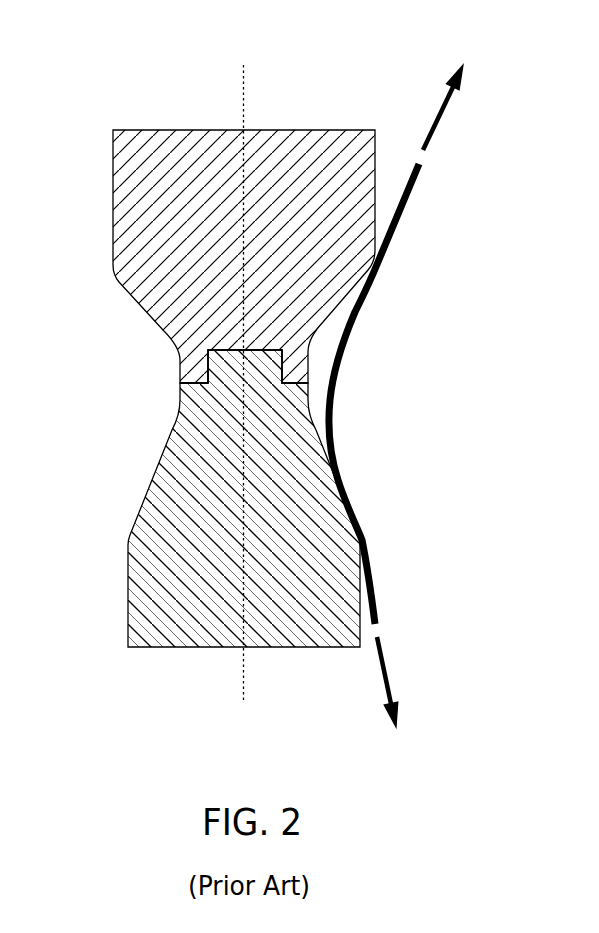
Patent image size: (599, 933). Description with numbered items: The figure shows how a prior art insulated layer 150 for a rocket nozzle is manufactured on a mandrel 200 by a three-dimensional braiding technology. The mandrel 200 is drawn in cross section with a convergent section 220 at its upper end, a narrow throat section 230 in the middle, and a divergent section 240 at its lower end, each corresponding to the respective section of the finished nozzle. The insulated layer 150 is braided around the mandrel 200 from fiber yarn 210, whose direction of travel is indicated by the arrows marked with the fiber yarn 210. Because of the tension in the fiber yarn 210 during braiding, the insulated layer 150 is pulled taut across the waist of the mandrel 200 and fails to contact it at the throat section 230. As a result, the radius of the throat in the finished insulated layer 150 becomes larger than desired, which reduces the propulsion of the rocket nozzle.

The mandrel 200 is at (148, 130).
The convergent section 220 is at (141, 296).
The throat section 230 is at (177, 367).
The divergent section 240 is at (148, 472).
The insulated layer 150 is at (343, 347).
The fiber yarn 210 is at (445, 404).